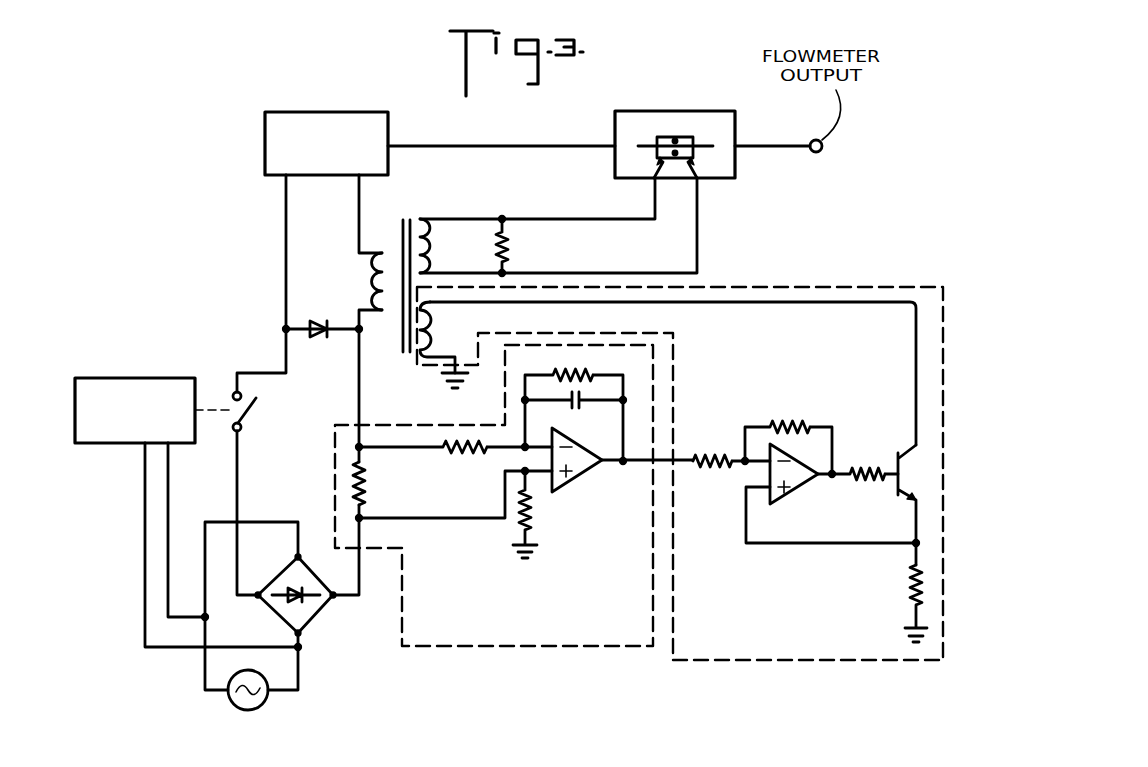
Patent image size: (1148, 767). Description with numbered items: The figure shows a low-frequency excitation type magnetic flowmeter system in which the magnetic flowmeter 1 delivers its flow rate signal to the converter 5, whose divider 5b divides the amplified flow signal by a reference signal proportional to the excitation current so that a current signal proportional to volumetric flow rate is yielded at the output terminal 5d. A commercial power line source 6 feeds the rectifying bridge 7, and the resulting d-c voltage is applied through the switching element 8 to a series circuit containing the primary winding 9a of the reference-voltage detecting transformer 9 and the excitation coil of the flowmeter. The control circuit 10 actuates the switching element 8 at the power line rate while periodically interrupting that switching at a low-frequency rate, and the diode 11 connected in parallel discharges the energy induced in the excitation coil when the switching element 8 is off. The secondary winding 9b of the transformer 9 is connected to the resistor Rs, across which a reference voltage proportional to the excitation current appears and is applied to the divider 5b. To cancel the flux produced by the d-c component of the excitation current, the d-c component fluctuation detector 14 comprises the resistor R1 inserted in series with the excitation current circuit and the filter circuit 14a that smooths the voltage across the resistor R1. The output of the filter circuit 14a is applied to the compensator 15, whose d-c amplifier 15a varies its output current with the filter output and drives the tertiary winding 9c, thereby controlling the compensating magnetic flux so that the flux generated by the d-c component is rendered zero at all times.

The magnetic flowmeter 1 is at (342, 110).
The converter 5 is at (634, 111).
The divider 5b is at (657, 150).
The output terminal 5d is at (819, 153).
The commercial power line source 6 is at (263, 707).
The rectifying bridge 7 is at (317, 617).
The switching element 8 is at (248, 408).
The reference-voltage detecting transformer 9 is at (404, 218).
The primary winding 9a is at (381, 256).
The secondary winding 9b is at (438, 232).
The tertiary winding 9c is at (427, 358).
The control circuit 10 is at (170, 378).
The diode 11 is at (318, 318).
The d-c component fluctuation detector 14 is at (483, 647).
The filter circuit 14a is at (575, 477).
The compensator 15 is at (804, 288).
The d-c amplifier 15a is at (790, 491).
The resistor R1 is at (368, 487).
The resistor Rs is at (506, 246).